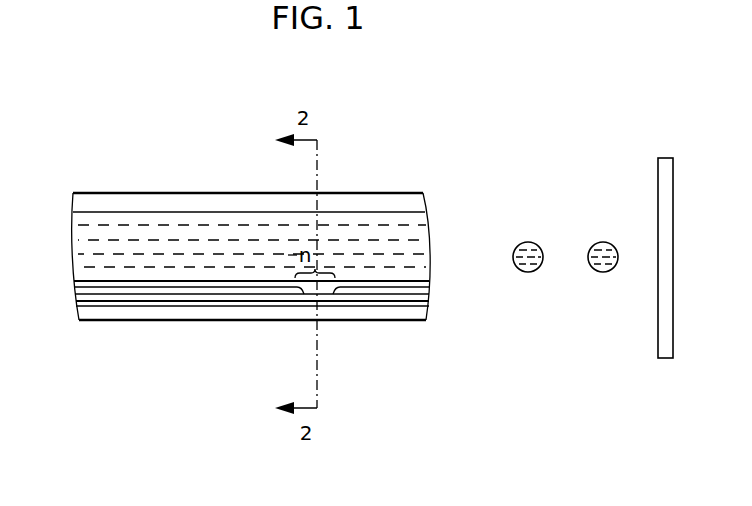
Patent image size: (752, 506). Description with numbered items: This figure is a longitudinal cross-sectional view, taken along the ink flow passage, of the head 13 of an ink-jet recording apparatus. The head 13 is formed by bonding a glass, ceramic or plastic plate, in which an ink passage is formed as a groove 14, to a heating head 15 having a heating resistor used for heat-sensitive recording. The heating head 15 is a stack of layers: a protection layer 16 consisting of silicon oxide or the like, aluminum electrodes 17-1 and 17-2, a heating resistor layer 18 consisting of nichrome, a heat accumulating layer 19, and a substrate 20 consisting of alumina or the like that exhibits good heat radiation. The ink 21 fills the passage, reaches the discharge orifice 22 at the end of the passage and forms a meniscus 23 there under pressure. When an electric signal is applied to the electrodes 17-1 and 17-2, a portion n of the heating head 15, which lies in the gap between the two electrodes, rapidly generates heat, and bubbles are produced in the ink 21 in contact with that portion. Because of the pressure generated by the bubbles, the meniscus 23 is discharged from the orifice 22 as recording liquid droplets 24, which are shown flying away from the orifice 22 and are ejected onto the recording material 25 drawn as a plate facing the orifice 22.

The head 13 is at (167, 197).
The groove 14 is at (242, 212).
The heating head 15 is at (62, 281).
The protection layer 16 is at (138, 283).
The aluminum electrode 17-1 is at (190, 290).
The aluminum electrode 17-2 is at (402, 293).
The heating resistor layer 18 is at (233, 298).
The heat accumulating layer 19 is at (268, 306).
The substrate 20 is at (357, 322).
The ink 21 is at (103, 220).
The discharge orifice 22 is at (433, 275).
The meniscus 23 is at (425, 252).
The recording liquid droplets 24 is at (510, 230).
The recording material 25 is at (658, 188).